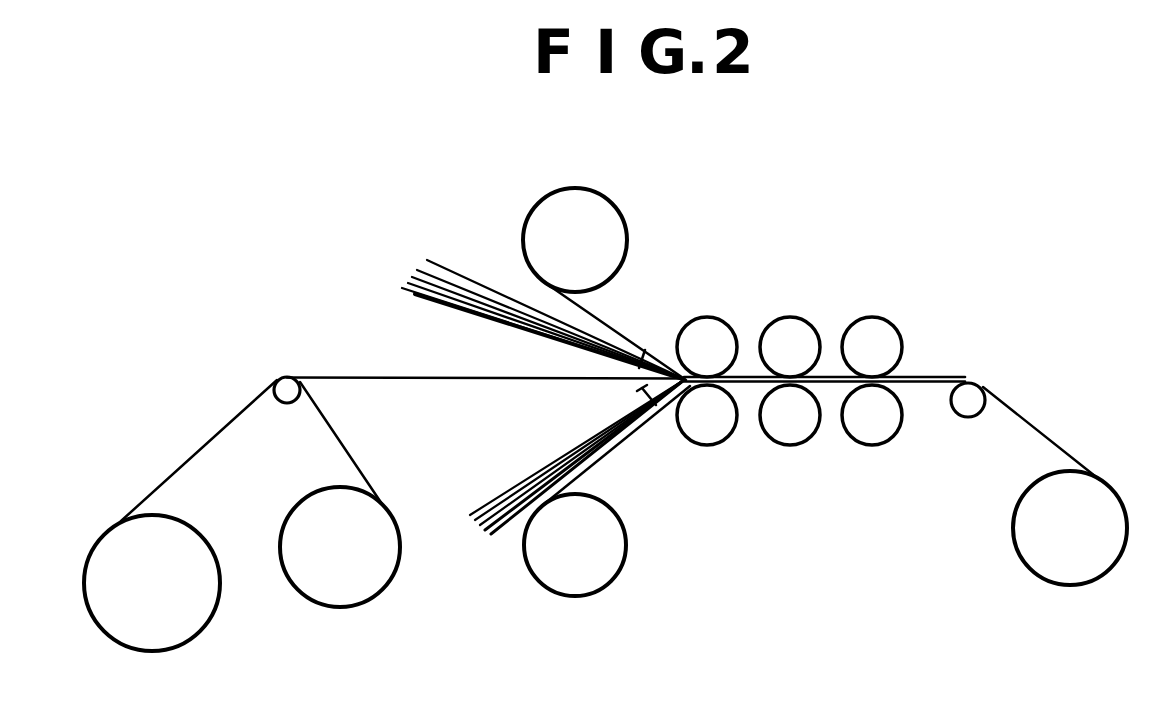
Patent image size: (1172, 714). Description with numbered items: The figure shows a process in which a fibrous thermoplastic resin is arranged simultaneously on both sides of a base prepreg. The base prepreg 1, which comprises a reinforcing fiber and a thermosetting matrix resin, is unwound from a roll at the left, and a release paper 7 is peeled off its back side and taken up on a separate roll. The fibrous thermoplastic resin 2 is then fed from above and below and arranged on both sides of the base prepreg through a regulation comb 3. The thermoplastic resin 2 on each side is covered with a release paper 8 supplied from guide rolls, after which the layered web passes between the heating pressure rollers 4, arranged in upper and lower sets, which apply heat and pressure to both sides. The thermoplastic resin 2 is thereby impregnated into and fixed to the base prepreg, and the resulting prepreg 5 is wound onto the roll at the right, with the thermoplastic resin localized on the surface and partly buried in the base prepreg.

The base prepreg 1 is at (195, 452).
The fibrous thermoplastic resin 2 is at (439, 264).
The regulation comb 3 is at (632, 372).
The heating pressure roller 4 is at (897, 302).
The prepreg 5 is at (1026, 422).
The release paper 7 is at (353, 463).
The release paper 8 is at (617, 322).